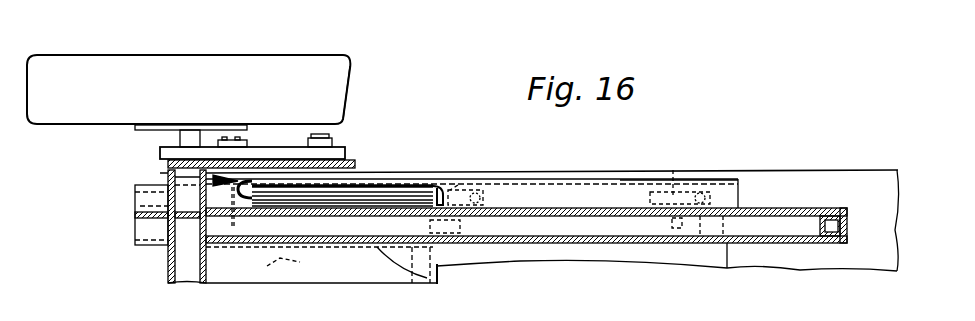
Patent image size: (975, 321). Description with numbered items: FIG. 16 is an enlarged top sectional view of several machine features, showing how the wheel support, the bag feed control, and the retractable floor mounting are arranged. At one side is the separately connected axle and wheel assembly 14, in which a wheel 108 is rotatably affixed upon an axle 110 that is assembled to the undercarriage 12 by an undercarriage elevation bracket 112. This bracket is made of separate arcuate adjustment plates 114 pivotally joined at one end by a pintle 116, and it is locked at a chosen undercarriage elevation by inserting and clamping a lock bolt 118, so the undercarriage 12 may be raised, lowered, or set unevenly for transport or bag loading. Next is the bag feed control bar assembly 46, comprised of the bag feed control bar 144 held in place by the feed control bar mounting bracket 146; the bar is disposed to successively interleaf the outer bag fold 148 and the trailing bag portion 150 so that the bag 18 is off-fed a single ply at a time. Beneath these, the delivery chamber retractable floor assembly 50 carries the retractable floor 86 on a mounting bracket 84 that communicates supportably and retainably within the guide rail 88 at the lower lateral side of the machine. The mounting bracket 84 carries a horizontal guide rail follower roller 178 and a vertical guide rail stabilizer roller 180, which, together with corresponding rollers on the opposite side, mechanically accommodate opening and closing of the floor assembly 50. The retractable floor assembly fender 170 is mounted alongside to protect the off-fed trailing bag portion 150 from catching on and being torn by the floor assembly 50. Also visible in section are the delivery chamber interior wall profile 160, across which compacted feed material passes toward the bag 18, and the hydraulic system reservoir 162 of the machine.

The wheel 108 is at (108, 55).
The axle 110 is at (182, 137).
The undercarriage elevation bracket 112 is at (258, 147).
The arcuate adjustment plate 114 is at (283, 157).
The pintle 116 is at (347, 72).
The lock bolt 118 is at (235, 139).
The separately connected axle and wheel assembly 14 is at (347, 138).
The undercarriage 12 is at (168, 255).
The bag feed control bar 144 is at (240, 188).
The bag feed control bar assembly 46 is at (214, 180).
The retractable floor 86 is at (500, 254).
The delivery chamber interior wall profile 160 is at (438, 267).
The hydraulic system reservoir 162 is at (247, 287).
The bag 18 is at (398, 196).
The trailing bag portion 150 is at (513, 173).
The outer bag fold 148 is at (372, 192).
The feed control bar mounting bracket 146 is at (412, 188).
The guide rail 88 is at (564, 196).
The retractable floor assembly fender 170 is at (738, 190).
The vertical guide rail stabilizer roller 180 is at (485, 197).
The horizontal guide rail follower roller 178 is at (458, 228).
The mounting bracket 84 is at (458, 185).
The retractable floor assembly 50 is at (623, 170).